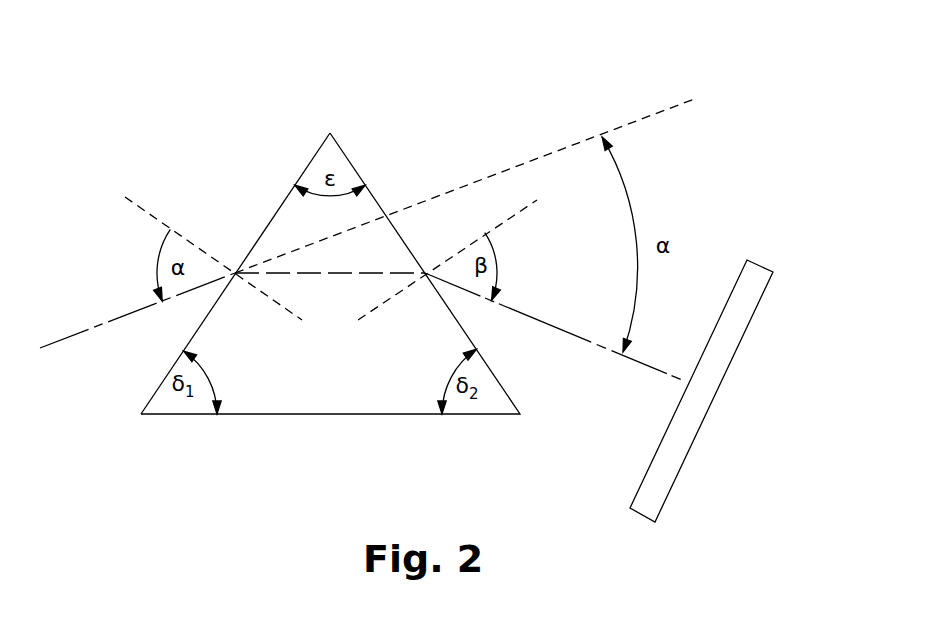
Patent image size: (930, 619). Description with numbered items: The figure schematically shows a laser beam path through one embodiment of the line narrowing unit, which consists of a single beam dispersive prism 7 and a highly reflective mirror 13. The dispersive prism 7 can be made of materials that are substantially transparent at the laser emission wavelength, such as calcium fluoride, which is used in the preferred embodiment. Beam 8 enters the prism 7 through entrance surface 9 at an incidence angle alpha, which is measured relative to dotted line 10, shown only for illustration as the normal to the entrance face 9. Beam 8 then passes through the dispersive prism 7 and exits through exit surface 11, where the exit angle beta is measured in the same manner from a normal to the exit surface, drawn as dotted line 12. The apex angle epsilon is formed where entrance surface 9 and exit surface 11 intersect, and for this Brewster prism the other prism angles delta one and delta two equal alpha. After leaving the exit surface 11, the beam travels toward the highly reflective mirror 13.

The dispersive prism 7 is at (332, 466).
The beam 8 is at (137, 325).
The entrance surface 9 is at (257, 184).
The dotted line 10 is at (213, 251).
The exit surface 11 is at (426, 203).
The normal to exit face 12 is at (464, 252).
The highly reflective mirror 13 is at (742, 364).